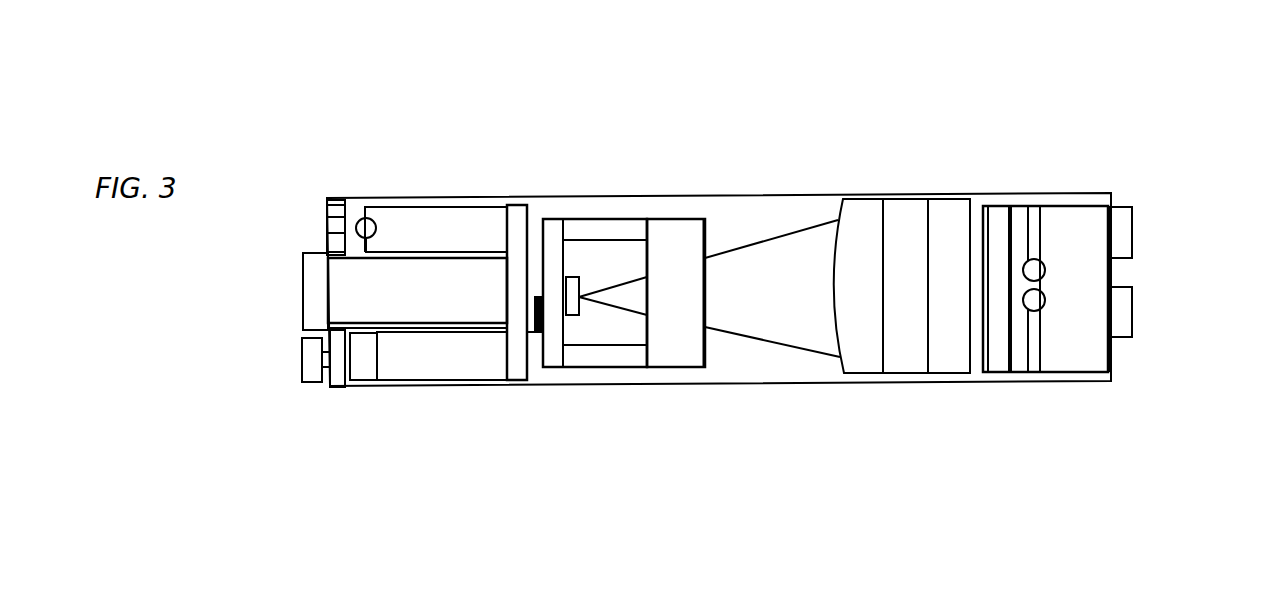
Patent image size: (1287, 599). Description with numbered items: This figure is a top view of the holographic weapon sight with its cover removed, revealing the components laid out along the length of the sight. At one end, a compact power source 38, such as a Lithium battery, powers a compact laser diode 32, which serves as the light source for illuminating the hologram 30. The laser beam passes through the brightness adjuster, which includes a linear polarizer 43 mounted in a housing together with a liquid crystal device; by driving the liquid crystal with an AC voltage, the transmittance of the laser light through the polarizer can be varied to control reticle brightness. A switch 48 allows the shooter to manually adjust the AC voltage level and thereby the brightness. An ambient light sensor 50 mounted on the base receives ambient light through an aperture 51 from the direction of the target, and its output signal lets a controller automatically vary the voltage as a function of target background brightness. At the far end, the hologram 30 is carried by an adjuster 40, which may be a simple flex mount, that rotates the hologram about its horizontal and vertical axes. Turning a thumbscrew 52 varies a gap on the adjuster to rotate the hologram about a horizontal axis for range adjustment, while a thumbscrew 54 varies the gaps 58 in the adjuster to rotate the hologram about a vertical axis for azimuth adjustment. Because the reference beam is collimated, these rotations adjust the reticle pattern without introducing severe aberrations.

The hologram 30 is at (982, 340).
The laser diode 32 is at (572, 288).
The power source 38 is at (357, 290).
The adjuster 40 is at (1074, 235).
The linear polarizer 43 is at (700, 217).
The switch 48 is at (292, 362).
The ambient light sensor 50 is at (363, 218).
The aperture 51 is at (320, 218).
The thumbscrew 52 is at (1142, 228).
The thumbscrew 54 is at (1145, 318).
The gaps 58 is at (1032, 248).